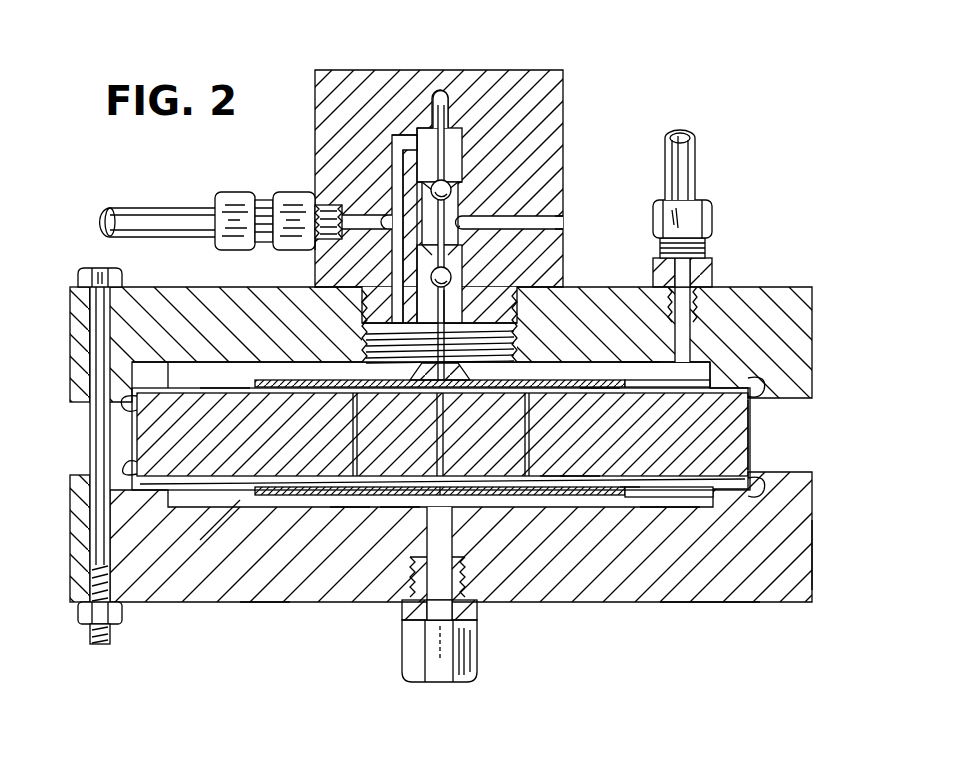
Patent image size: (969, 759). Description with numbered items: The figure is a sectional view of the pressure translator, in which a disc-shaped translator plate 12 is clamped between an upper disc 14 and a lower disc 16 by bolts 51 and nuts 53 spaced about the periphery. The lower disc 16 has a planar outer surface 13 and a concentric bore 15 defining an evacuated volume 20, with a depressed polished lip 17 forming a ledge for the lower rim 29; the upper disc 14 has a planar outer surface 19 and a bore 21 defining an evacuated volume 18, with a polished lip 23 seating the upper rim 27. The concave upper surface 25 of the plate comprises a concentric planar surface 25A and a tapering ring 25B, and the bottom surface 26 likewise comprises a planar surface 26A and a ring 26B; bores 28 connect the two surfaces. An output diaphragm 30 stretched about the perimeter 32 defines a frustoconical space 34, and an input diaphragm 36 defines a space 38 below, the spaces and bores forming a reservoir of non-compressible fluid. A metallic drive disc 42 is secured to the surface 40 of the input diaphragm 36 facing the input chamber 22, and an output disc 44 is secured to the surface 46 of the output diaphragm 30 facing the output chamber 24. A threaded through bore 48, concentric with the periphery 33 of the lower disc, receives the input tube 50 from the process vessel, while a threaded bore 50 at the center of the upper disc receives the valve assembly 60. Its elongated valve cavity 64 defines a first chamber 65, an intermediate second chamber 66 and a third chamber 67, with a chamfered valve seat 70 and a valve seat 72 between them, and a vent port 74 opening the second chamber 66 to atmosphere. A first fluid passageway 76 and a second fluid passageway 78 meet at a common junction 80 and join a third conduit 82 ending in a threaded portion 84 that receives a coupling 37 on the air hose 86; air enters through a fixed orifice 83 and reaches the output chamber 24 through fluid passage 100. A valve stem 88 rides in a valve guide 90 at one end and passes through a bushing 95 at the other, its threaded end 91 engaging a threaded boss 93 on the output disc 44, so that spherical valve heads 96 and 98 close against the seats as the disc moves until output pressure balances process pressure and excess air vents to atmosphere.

The translator plate 12 is at (198, 437).
The planar outer surface 13 is at (705, 604).
The upper disc 14 is at (190, 295).
The first concentric bore 15 is at (716, 497).
The lower disc 16 is at (262, 565).
The depressed polished lip 17 is at (762, 484).
The evacuated volume 18 is at (187, 356).
The planar outer surface 19 is at (613, 287).
The evacuated volume 20 is at (345, 505).
The concentric bore 21 is at (710, 372).
The input chamber 22 is at (395, 503).
The depressed polished lip 23 is at (758, 388).
The output chamber 24 is at (303, 363).
The upper surface 25 is at (317, 393).
The concentric planar surface 25A is at (603, 388).
The ring 25B is at (632, 362).
The bottom surface 26 is at (593, 480).
The concentric planar surface 26A is at (563, 480).
The ring 26B is at (635, 492).
The upper rim 27 is at (128, 404).
The bores 28 is at (518, 442).
The lower rim 29 is at (145, 478).
The output diaphragm 30 is at (650, 374).
The perimeter 32 is at (750, 450).
The periphery 33 is at (812, 552).
The space 34 is at (498, 378).
The input diaphragm 36 is at (665, 492).
The coupling 37 is at (233, 195).
The space 38 is at (477, 482).
The surface 40 is at (247, 480).
The drive disc 42 is at (520, 482).
The output disc 44 is at (355, 377).
The surface 46 is at (223, 383).
The through bore 48 is at (467, 585).
The input tube 50 is at (518, 333).
The bolts 51 is at (90, 369).
The nuts 53 is at (87, 622).
The valve assembly 60 is at (535, 45).
The elongated valve cavity 64 is at (470, 177).
The first chamber 65 is at (455, 143).
The second chamber 66 is at (458, 200).
The third chamber 67 is at (455, 282).
The chamfered valve seat 70 is at (395, 214).
The valve seat 72 is at (460, 262).
The vent port 74 is at (567, 221).
The first fluid passageway 76 is at (395, 133).
The second fluid passageway 78 is at (395, 259).
The common junction 80 is at (393, 168).
The third conduit 82 is at (355, 212).
The fixed orifice 83 is at (310, 250).
The threaded portion 84 is at (350, 214).
The hose 86 is at (157, 212).
The valve stem 88 is at (418, 127).
The valve guide 90 is at (452, 92).
The threaded end 91 is at (423, 372).
The threaded boss 93 is at (447, 378).
The bushing 95 is at (478, 368).
The valve head 96 is at (495, 216).
The valve head 98 is at (462, 297).
The fluid passage 100 is at (398, 372).